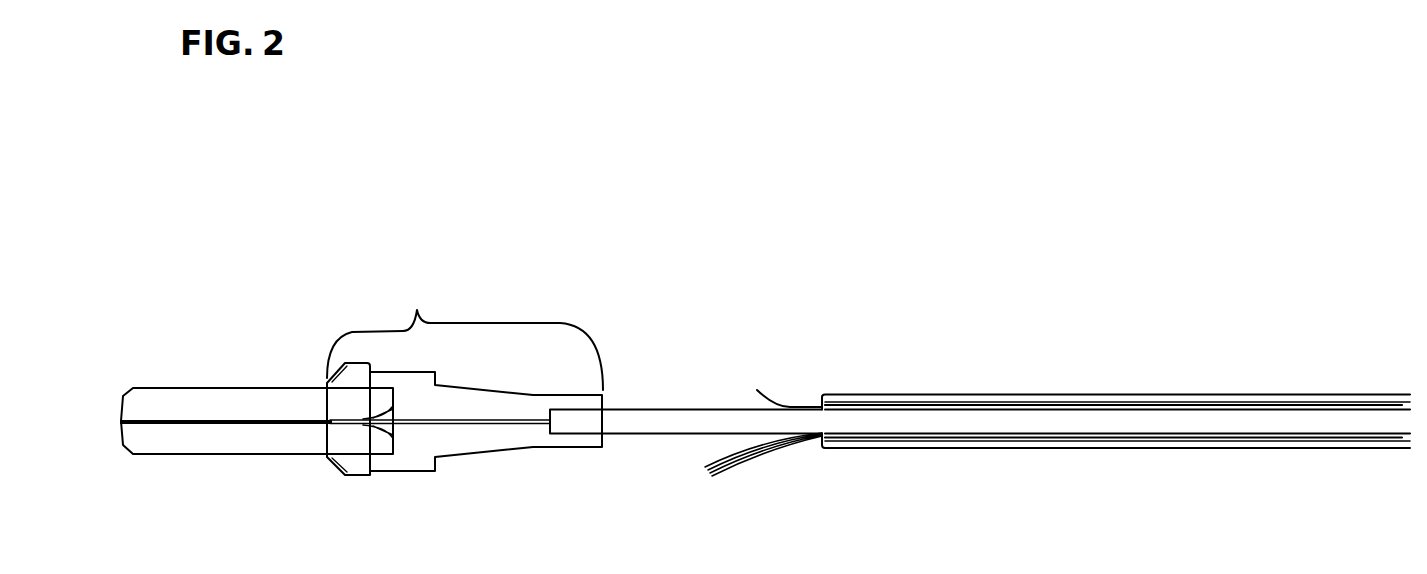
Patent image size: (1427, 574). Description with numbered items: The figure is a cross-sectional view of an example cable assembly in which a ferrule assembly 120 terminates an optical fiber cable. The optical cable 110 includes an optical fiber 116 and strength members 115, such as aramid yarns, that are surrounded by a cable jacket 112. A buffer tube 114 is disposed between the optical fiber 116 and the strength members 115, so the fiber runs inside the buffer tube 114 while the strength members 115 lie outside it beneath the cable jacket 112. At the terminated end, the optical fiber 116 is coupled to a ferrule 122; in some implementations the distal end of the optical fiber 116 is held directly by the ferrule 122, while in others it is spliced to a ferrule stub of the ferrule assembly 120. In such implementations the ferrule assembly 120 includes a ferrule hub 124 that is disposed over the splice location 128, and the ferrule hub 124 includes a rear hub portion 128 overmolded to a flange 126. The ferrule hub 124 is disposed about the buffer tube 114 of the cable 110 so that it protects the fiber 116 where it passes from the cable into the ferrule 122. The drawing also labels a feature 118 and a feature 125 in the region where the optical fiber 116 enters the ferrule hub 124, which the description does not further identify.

The optical cable 110 is at (920, 392).
The cable jacket 112 is at (900, 448).
The buffer tube 114 is at (672, 408).
The strength members 115 is at (730, 457).
The optical fiber 116 is at (472, 422).
The optical fiber 118 is at (448, 420).
The ferrule assembly 120 is at (217, 375).
The ferrule 122 is at (197, 455).
The ferrule hub 124 is at (465, 336).
The fiber bond point 125 is at (413, 422).
The flange 126 is at (350, 477).
The rear hub portion 128 is at (477, 457).